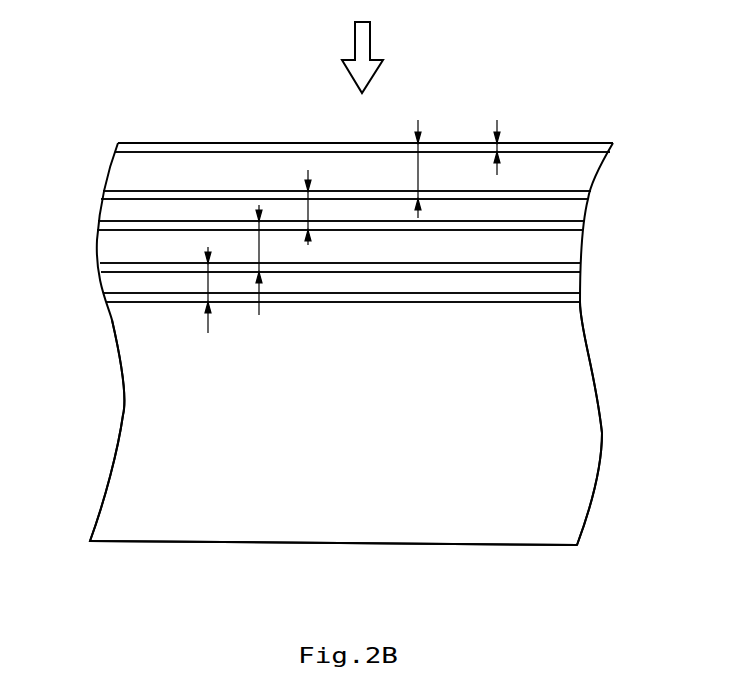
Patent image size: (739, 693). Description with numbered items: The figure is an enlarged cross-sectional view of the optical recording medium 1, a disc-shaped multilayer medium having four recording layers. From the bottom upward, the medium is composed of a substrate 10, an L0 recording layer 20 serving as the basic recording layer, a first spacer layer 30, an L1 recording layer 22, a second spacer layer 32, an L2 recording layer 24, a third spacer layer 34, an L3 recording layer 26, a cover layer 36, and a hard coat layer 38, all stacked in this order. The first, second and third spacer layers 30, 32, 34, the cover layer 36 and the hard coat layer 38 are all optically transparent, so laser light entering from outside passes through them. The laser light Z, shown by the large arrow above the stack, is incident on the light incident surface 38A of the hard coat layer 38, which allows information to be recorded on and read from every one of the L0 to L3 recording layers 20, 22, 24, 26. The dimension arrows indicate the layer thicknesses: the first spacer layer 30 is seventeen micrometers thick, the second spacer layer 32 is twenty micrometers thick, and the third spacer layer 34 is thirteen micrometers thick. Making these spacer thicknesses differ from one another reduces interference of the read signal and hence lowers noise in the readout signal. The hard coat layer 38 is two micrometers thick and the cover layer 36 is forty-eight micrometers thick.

The optical recording medium 1 is at (361, 283).
The substrate 10 is at (585, 451).
The L0 recording layer 20 is at (580, 300).
The L1 recording layer 22 is at (582, 270).
The L2 recording layer 24 is at (585, 228).
The L3 recording layer 26 is at (590, 196).
The first spacer layer 30 is at (108, 279).
The second spacer layer 32 is at (103, 243).
The third spacer layer 34 is at (110, 207).
The cover layer 36 is at (115, 175).
The hard coat layer 38 is at (116, 148).
The light incident surface 38A is at (170, 141).